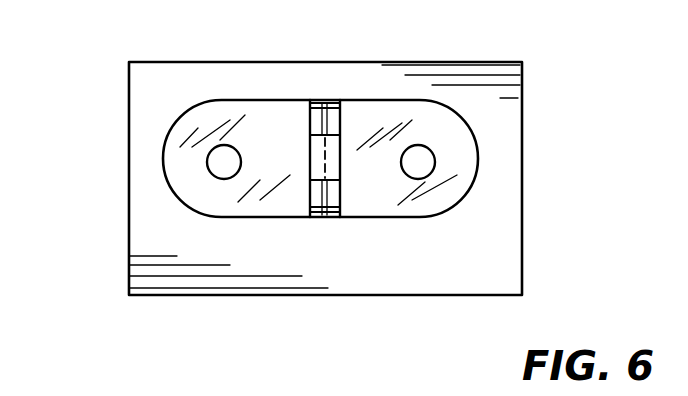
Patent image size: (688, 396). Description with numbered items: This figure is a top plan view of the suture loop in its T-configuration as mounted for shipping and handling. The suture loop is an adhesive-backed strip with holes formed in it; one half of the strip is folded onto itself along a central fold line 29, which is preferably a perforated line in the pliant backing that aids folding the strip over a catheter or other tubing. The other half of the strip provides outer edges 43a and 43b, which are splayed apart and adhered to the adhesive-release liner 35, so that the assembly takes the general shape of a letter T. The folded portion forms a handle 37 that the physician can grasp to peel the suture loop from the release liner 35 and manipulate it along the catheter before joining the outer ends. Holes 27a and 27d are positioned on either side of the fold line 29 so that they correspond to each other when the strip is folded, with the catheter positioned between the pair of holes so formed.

The adhesive-release liner 35 is at (498, 97).
The fold line 29 is at (318, 148).
The handle 37 is at (333, 148).
The hole 27a is at (213, 158).
The hole 27d is at (432, 160).
The outer edge 43a is at (240, 192).
The outer edge 43b is at (430, 195).